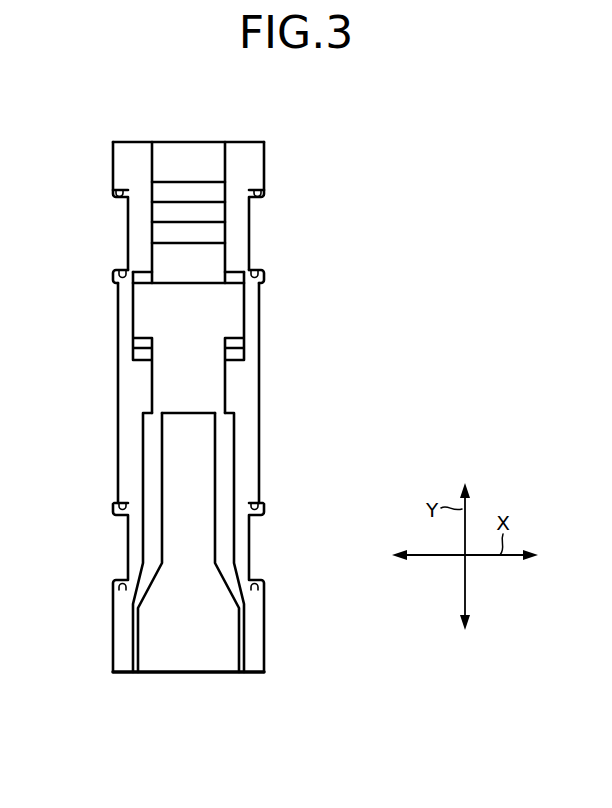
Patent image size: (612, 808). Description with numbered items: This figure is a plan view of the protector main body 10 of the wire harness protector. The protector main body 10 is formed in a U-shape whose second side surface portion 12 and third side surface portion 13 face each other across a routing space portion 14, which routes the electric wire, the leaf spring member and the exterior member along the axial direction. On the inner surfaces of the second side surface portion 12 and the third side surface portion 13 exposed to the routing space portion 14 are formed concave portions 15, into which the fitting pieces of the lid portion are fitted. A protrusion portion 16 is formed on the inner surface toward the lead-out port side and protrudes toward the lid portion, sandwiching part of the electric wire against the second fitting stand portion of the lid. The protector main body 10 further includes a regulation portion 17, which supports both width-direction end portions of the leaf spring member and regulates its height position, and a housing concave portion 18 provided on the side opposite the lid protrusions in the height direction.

The protector main body 10 is at (324, 146).
The second side surface portion 12 is at (246, 386).
The third side surface portion 13 is at (130, 387).
The routing space portion 14 is at (206, 257).
The concave portion 15 is at (238, 314).
The protrusion portion 16 is at (188, 210).
The regulation portion 17 is at (138, 649).
The housing concave portion 18 is at (187, 640).